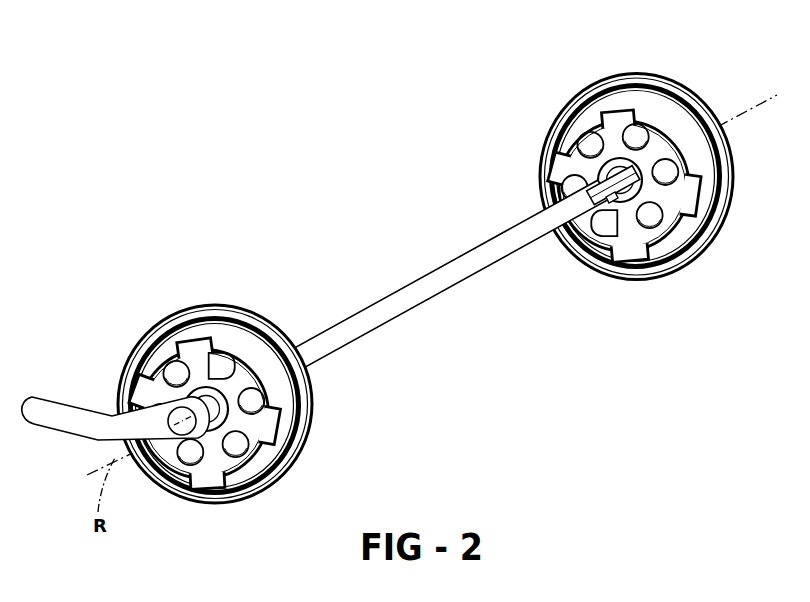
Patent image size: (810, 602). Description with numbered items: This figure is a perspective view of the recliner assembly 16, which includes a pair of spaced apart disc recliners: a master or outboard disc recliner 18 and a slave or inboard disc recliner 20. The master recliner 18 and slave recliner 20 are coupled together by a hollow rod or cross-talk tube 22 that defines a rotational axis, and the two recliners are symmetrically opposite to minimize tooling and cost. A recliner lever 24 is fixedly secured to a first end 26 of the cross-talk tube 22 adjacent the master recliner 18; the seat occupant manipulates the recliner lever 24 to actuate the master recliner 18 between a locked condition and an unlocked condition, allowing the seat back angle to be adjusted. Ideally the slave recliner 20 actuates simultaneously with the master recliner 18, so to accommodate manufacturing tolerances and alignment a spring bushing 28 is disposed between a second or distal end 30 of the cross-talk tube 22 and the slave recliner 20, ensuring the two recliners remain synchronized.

The recliner assembly 16 is at (638, 173).
The master disc recliner 18 is at (215, 306).
The slave disc recliner 20 is at (700, 253).
The cross-talk tube 22 is at (455, 292).
The recliner lever 24 is at (48, 408).
The first end 26 is at (208, 430).
The spring bushing 28 is at (627, 197).
The second or distal end 30 is at (608, 204).